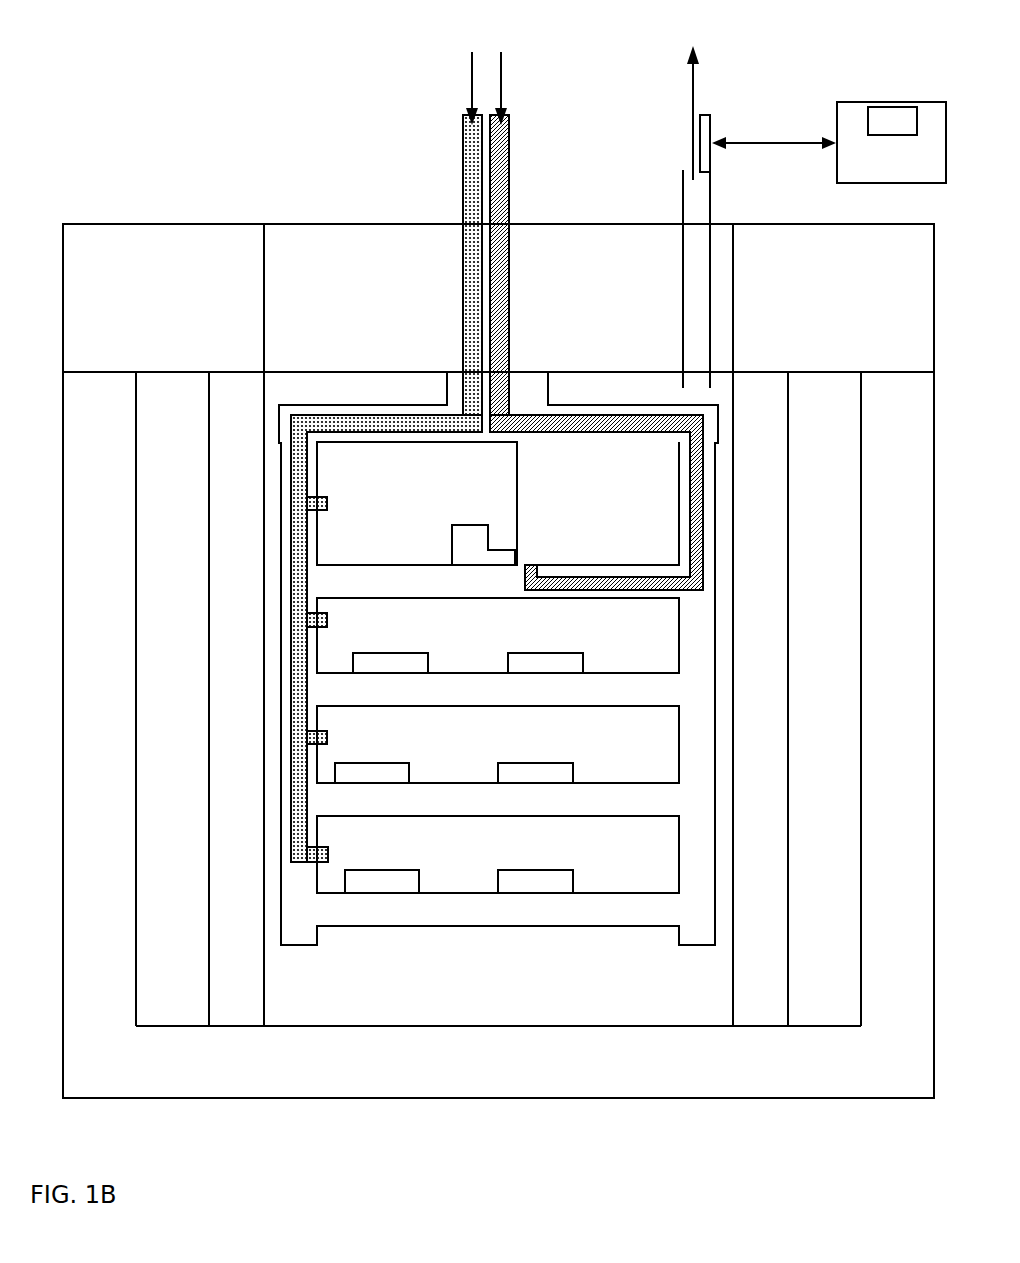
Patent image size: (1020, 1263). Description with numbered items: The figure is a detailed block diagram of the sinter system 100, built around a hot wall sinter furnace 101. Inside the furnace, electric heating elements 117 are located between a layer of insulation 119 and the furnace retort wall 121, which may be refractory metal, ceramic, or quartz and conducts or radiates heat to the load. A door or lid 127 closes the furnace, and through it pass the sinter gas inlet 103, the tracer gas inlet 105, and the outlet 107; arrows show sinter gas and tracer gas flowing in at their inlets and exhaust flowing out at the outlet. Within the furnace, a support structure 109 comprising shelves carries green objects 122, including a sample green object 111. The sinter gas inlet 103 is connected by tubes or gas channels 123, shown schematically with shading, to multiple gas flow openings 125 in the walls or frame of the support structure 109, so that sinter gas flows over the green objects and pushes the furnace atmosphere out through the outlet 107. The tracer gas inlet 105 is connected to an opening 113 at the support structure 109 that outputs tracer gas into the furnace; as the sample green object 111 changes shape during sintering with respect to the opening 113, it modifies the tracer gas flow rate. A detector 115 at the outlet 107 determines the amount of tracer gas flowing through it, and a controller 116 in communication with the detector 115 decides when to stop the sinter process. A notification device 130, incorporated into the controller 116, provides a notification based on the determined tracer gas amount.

The system 100 is at (142, 94).
The sinter furnace 101 is at (107, 224).
The sinter gas inlet 103 is at (463, 135).
The tracer gas inlet 105 is at (510, 137).
The outlet 107 is at (682, 202).
The support structure 109 is at (423, 563).
The sample green object 111 is at (462, 527).
The opening 113 is at (537, 555).
The detector 115 is at (706, 114).
The controller 116 is at (910, 168).
The heating elements 117 is at (193, 615).
The layer of insulation 119 is at (115, 615).
The furnace retort wall 121 is at (248, 615).
The green objects 122 is at (567, 762).
The gas channels 123 is at (372, 425).
The gas flow openings 125 is at (327, 622).
The lid 127 is at (365, 339).
The notification device 130 is at (892, 121).